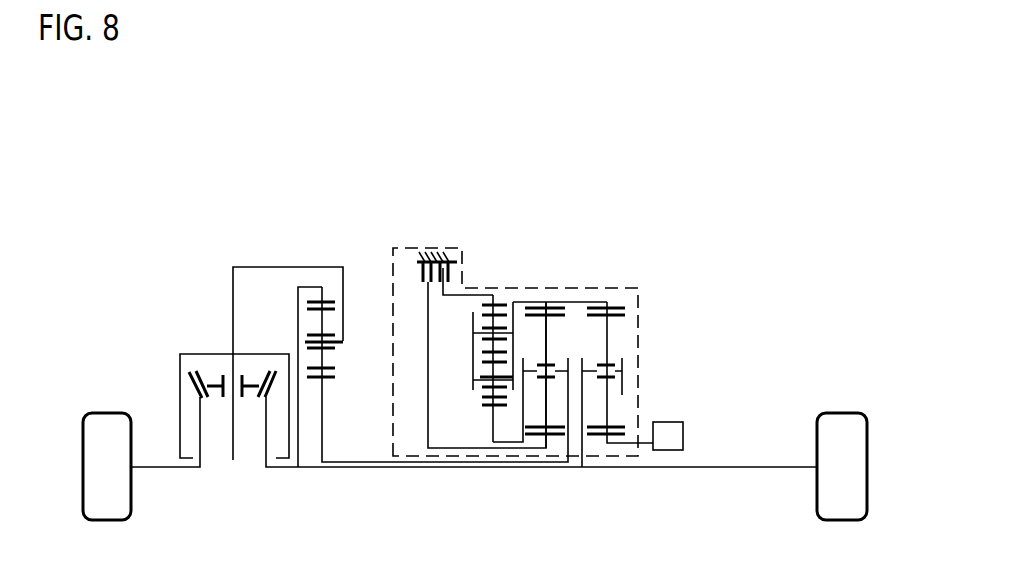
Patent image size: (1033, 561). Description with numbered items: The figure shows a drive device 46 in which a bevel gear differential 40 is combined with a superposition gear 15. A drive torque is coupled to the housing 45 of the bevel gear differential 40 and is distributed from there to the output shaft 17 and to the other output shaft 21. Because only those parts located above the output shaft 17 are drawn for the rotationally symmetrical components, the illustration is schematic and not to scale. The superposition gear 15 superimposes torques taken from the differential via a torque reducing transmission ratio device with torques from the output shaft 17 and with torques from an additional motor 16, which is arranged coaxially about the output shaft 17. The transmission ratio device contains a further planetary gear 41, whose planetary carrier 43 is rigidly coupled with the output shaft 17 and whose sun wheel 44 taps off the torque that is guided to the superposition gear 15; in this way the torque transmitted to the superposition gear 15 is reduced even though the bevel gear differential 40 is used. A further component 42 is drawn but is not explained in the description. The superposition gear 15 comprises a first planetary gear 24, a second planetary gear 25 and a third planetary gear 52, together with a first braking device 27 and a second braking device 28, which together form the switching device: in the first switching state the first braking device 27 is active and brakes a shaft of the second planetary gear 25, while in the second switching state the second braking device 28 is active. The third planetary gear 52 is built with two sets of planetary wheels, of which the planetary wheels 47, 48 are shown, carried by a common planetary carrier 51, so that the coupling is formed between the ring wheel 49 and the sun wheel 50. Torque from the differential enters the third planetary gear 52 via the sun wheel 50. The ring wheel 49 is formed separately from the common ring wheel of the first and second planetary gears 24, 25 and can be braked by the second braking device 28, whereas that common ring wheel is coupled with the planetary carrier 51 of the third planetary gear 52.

The superposition gear 15 is at (653, 327).
The additional motor 16 is at (685, 432).
The output shaft 17 is at (335, 468).
The other output shaft 21 is at (180, 468).
The first planetary gear 24 is at (607, 295).
The second planetary gear 25 is at (550, 292).
The first braking device 27 is at (420, 272).
The second braking device 28 is at (457, 268).
The bevel gear differential 40 is at (203, 322).
The further planetary gear 41 is at (344, 338).
The clutch plates 42 is at (322, 297).
The planetary carrier 43 is at (335, 343).
The sun wheel 44 is at (323, 432).
The housing 45 is at (260, 353).
The drive device 46 is at (631, 291).
The planetary wheel 47 is at (492, 322).
The planetary wheel 48 is at (482, 397).
The ring wheel 49 is at (495, 298).
The sun wheel 50 is at (493, 427).
The common planetary carrier 51 is at (473, 358).
The third planetary gear 52 is at (497, 293).